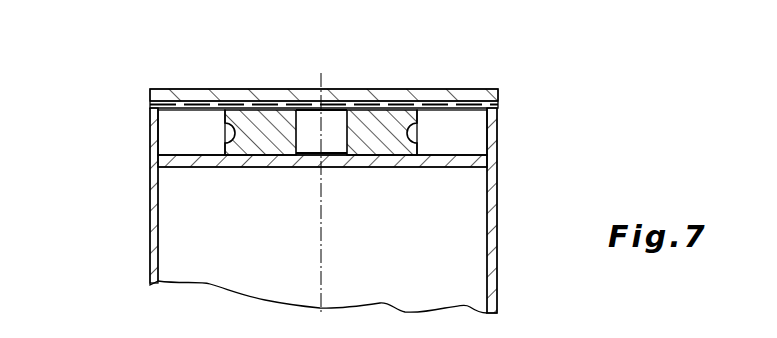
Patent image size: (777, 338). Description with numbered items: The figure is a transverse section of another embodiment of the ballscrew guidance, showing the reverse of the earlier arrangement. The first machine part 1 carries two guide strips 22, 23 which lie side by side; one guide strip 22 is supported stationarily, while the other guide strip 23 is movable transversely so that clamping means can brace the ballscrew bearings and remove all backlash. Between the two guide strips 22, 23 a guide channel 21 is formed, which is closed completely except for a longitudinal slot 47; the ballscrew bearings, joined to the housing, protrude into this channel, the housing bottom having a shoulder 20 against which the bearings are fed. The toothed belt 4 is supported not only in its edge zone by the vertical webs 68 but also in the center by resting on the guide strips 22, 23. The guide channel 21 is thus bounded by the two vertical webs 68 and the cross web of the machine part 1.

The first machine part 1 is at (150, 207).
The toothed belt 4 is at (233, 100).
The shoulder 20 is at (307, 92).
The guide channel 21 is at (201, 138).
The guide strip 22 is at (258, 143).
The guide strip 23 is at (375, 150).
The longitudinal slot 47 is at (445, 117).
The vertical web 68 is at (150, 125).